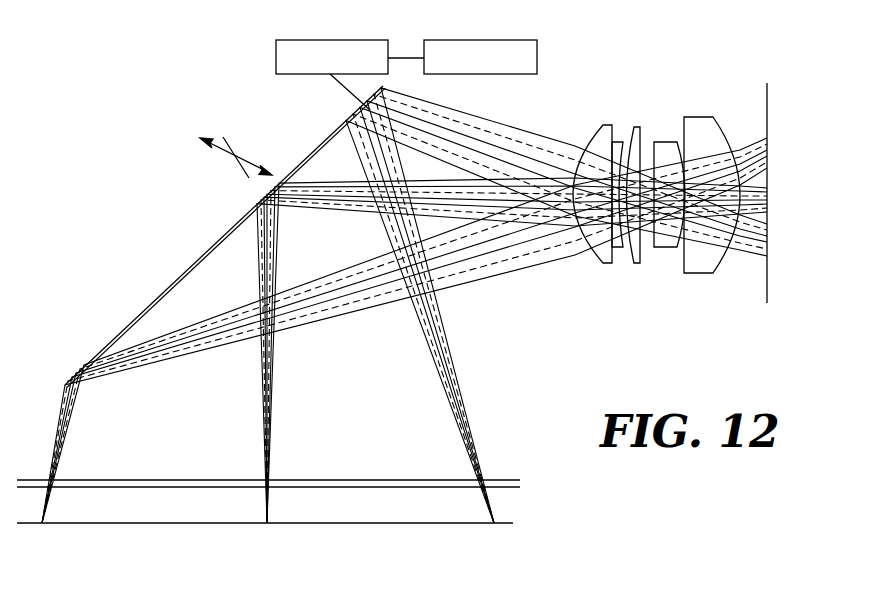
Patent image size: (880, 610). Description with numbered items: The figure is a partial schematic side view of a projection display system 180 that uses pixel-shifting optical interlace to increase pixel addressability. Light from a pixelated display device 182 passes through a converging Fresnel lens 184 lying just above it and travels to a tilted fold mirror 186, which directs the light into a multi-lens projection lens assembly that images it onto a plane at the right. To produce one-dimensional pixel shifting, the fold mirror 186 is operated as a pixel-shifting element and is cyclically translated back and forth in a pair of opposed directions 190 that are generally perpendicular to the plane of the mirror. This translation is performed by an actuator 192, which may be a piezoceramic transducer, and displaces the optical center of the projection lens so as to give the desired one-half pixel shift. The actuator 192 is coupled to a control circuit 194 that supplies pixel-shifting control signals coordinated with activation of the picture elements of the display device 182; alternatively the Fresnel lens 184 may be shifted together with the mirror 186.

The projection display system 180 is at (555, 307).
The pixelated display device 182 is at (508, 524).
The converging Fresnel lens 184 is at (512, 488).
The fold mirror 186 is at (123, 319).
The opposed directions 190 is at (199, 175).
The actuator 192 is at (357, 40).
The control circuit 194 is at (478, 40).